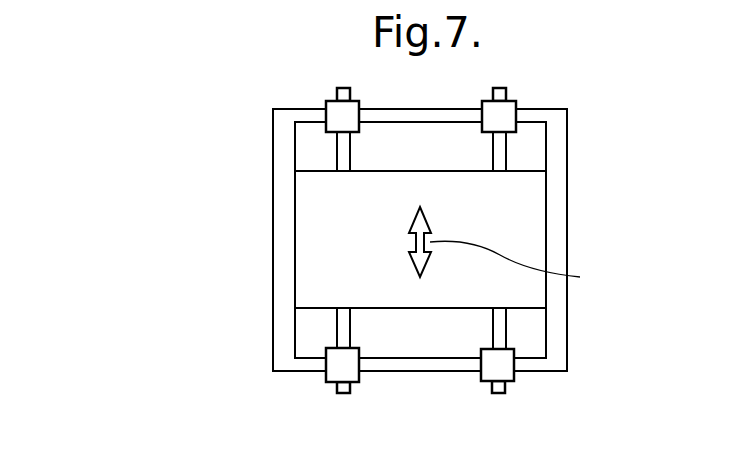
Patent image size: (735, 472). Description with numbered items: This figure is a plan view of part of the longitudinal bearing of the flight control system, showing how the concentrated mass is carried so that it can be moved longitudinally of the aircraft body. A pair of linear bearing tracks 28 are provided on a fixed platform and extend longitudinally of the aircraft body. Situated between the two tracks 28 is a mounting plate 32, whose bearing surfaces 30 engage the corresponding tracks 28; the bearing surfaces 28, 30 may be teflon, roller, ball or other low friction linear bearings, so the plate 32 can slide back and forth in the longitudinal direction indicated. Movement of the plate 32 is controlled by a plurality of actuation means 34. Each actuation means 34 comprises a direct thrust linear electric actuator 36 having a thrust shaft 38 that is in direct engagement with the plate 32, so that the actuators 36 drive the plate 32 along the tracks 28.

The linear bearing tracks 28 is at (285, 155).
The bearing surfaces 30 is at (547, 182).
The mounting plate 32 is at (318, 247).
The actuation means 34 is at (473, 263).
The direct thrust linear electric actuator 36 is at (332, 373).
The thrust shaft 38 is at (340, 332).